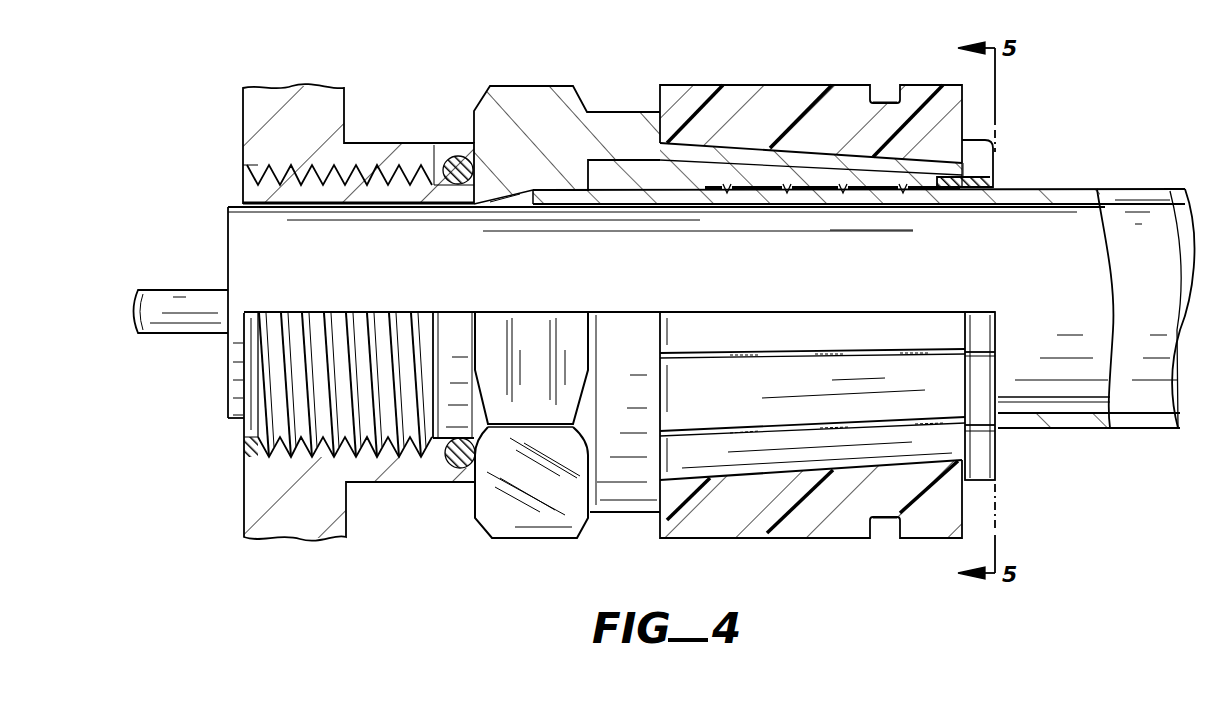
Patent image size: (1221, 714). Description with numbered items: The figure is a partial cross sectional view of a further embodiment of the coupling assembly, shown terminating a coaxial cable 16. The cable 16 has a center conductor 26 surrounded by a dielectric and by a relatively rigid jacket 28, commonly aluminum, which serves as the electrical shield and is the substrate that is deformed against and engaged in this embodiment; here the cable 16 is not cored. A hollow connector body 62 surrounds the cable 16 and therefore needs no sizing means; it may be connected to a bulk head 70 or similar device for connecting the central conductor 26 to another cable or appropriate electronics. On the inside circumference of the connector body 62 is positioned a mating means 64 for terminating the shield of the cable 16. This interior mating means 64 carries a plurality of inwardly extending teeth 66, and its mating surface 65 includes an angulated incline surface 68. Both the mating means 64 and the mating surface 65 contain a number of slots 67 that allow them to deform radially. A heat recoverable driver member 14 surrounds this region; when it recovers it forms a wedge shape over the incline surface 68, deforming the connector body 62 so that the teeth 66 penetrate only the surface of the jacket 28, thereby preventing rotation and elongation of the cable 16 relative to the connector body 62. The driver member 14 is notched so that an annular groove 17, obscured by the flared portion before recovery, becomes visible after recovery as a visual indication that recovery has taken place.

The driver member 14 is at (753, 512).
The coaxial cable 16 is at (1147, 397).
The annular groove 17 is at (885, 518).
The center conductor 26 is at (195, 308).
The jacket 28 is at (1045, 197).
The connector body 62 is at (507, 125).
The mating means 64 is at (663, 177).
The mating surface 65 is at (817, 187).
The teeth 66 is at (787, 190).
The slots 67 is at (813, 353).
The angulated incline surface 68 is at (870, 173).
The bulk head 70 is at (337, 495).